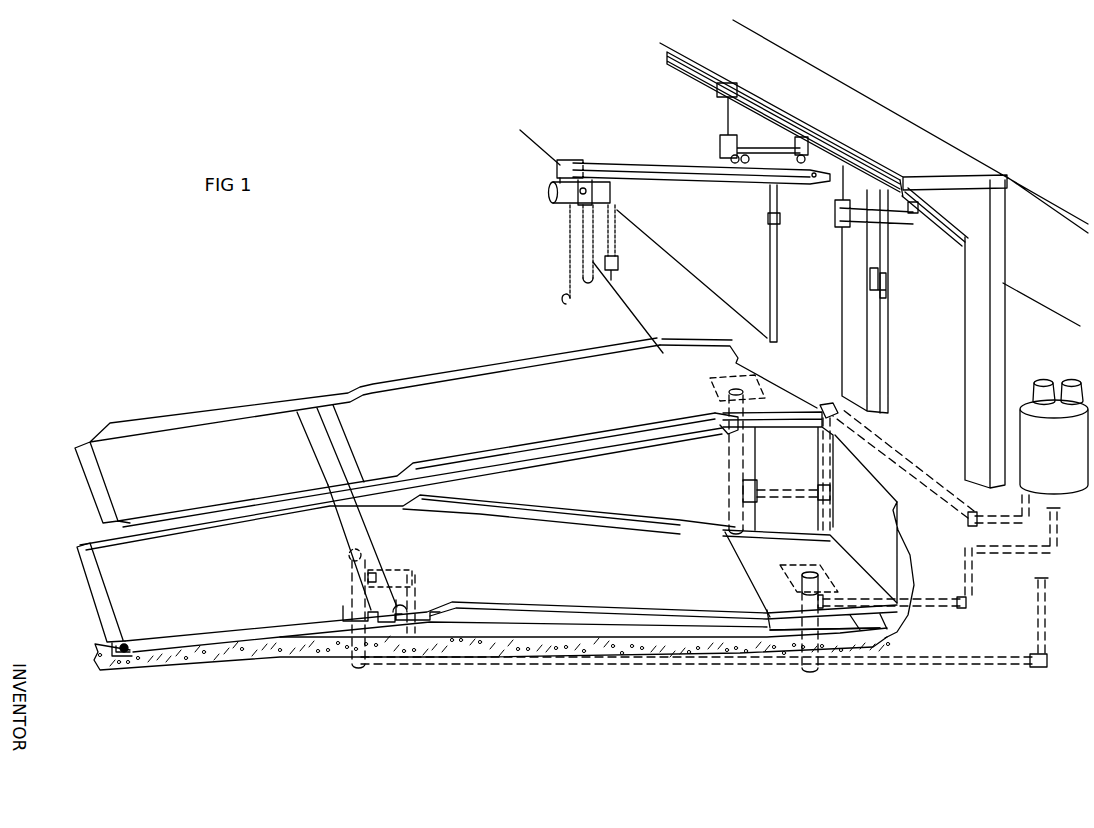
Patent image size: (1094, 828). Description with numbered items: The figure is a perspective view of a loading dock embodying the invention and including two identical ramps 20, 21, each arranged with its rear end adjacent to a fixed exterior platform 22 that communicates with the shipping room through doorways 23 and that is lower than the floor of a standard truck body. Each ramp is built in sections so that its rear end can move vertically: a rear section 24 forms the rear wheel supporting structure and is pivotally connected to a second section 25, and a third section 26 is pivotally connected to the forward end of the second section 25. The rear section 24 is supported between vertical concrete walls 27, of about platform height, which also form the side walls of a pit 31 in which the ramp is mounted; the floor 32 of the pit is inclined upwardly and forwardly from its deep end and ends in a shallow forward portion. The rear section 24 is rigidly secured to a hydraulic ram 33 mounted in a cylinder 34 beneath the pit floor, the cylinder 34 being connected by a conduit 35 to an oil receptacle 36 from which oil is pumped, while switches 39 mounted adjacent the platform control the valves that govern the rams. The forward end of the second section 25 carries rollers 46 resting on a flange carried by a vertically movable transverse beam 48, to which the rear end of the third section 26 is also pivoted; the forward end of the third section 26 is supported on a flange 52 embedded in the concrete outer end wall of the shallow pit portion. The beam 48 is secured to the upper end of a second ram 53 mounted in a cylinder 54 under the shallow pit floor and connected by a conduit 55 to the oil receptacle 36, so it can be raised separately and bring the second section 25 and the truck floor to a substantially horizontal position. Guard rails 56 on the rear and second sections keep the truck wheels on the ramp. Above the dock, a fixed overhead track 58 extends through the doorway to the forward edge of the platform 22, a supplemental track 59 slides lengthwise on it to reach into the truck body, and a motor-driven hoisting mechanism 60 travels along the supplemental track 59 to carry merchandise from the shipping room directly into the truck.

The ramp 20 is at (522, 591).
The ramp 21 is at (467, 403).
The platform 22 is at (647, 302).
The doorways 23 is at (903, 348).
The rear section 24 is at (743, 376).
The second section 25 is at (630, 415).
The third section 26 is at (290, 422).
The vertical walls 27 is at (660, 497).
The pit 31 is at (742, 634).
The floor of the pit 32 is at (622, 634).
The ram 33 is at (737, 450).
The cylinder 34 is at (740, 500).
The conduit 35 is at (931, 602).
The oil receptacle 36 is at (1073, 480).
The switches 39 is at (882, 277).
The rollers 46 is at (413, 612).
The transverse beam 48 is at (343, 521).
The flange 52 is at (122, 663).
The ram 53 is at (349, 555).
The cylinder 54 is at (354, 606).
The conduit 55 is at (932, 661).
The guard rails 56 is at (518, 372).
The overhead track 58 is at (750, 150).
The supplemental track 59 is at (701, 180).
The hoisting mechanism 60 is at (556, 196).